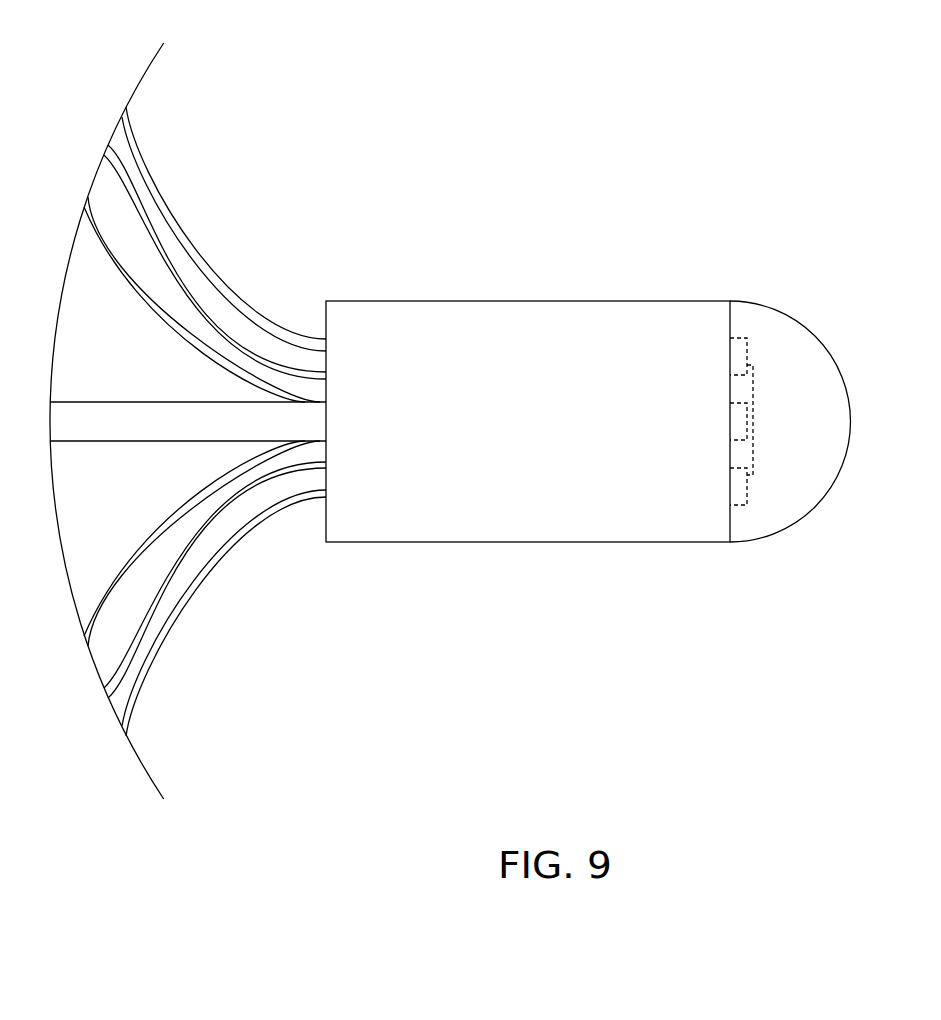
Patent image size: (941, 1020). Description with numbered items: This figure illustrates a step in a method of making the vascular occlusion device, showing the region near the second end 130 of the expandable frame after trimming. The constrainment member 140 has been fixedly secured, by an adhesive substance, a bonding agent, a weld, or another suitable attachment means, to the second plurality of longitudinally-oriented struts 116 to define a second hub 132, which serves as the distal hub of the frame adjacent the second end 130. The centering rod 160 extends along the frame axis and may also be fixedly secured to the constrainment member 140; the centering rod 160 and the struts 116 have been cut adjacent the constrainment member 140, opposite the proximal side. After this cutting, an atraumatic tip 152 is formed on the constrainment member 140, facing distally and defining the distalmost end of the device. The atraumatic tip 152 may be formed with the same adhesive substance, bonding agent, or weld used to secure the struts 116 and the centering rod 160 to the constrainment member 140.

The second plurality of longitudinally-oriented struts 116 is at (162, 612).
The second end 130 is at (488, 421).
The second hub 132 is at (530, 542).
The constrainment member 140 is at (626, 400).
The atraumatic tip 152 is at (840, 422).
The centering rod 160 is at (310, 400).